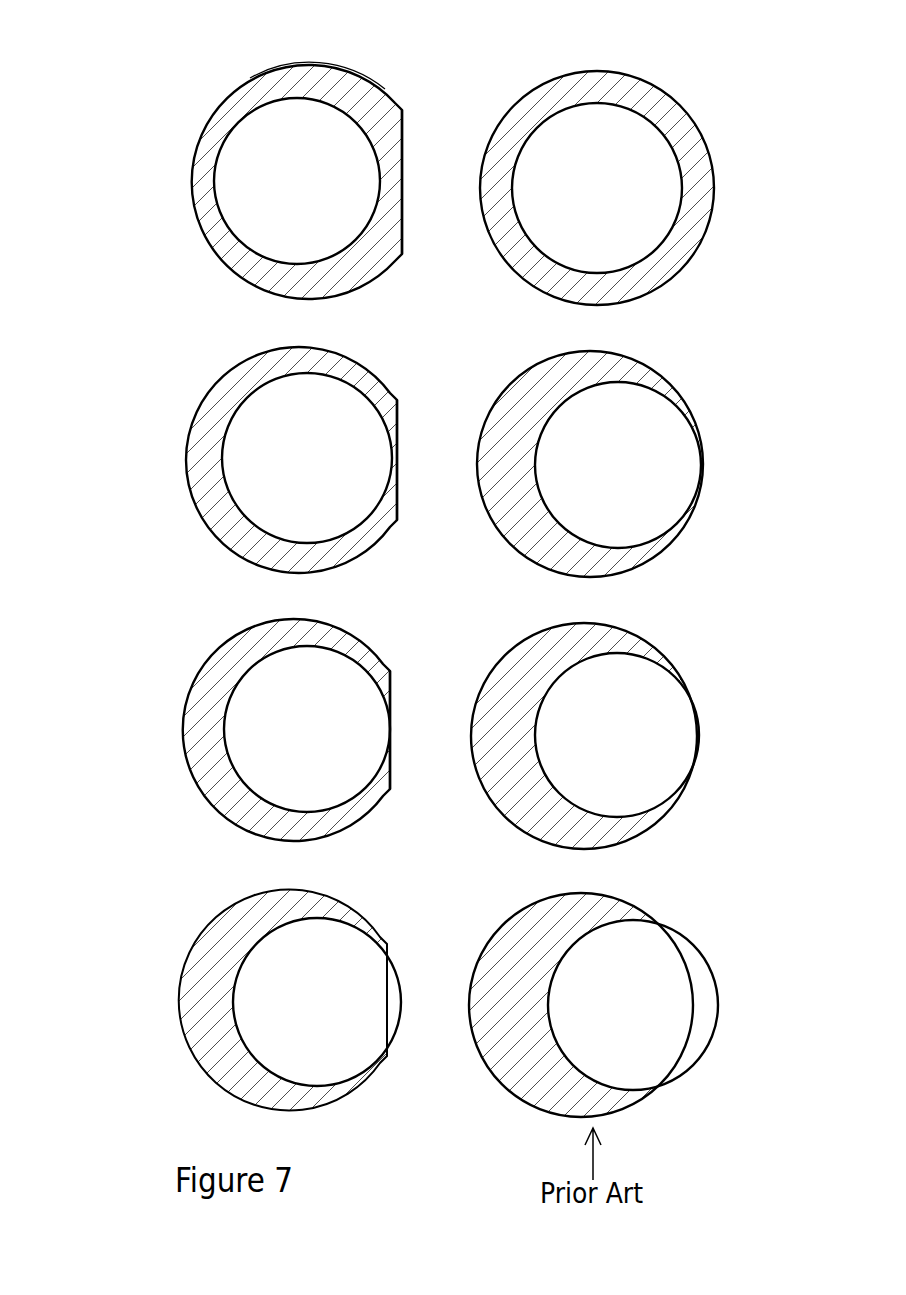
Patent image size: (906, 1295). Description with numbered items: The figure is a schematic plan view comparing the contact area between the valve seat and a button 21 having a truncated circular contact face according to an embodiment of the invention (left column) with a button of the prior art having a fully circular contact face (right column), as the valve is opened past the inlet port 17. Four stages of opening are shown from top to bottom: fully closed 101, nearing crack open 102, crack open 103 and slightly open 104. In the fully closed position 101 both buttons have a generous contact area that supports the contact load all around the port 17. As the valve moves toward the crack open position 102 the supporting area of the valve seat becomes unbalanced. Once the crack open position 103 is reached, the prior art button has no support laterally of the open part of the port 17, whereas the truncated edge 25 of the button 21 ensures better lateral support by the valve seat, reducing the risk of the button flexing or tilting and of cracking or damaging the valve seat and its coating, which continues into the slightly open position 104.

The inlet port 17 is at (327, 104).
The inlet button 21 is at (383, 91).
The truncated edge 25 is at (402, 157).
The fully closed position 101 is at (150, 167).
The nearing crack open position 102 is at (150, 458).
The crack open position 103 is at (150, 700).
The slightly open position 104 is at (150, 988).